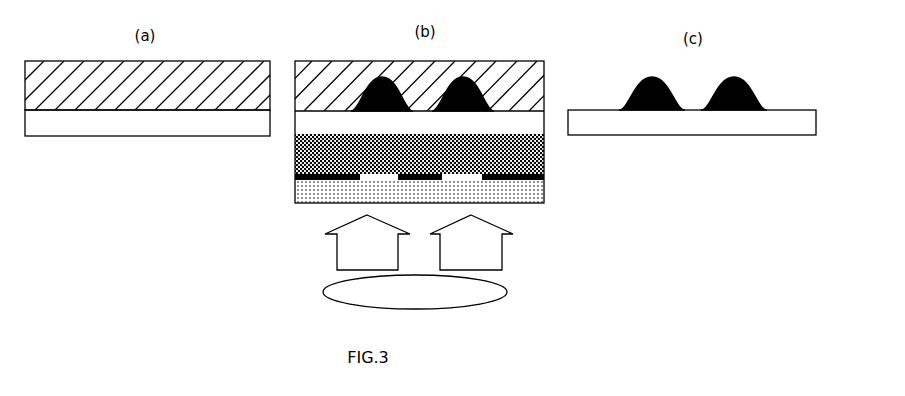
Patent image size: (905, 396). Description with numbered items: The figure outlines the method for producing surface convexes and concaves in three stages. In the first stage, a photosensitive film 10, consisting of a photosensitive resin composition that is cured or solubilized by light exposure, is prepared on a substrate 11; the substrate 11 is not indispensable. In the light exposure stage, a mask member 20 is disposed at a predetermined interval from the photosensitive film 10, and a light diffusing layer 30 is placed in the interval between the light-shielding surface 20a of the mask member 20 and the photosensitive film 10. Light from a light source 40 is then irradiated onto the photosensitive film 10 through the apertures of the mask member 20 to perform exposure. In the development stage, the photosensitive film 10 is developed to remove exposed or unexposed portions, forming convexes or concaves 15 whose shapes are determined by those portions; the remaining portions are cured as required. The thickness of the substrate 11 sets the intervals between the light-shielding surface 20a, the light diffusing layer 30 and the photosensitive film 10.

The photosensitive film 10 is at (177, 62).
The substrate 11 is at (80, 143).
The convexes or concaves 15 is at (718, 82).
The mask member 20 is at (294, 197).
The light-shielding surface 20a is at (295, 178).
The light diffusing layer 30 is at (548, 158).
The light source 40 is at (506, 290).